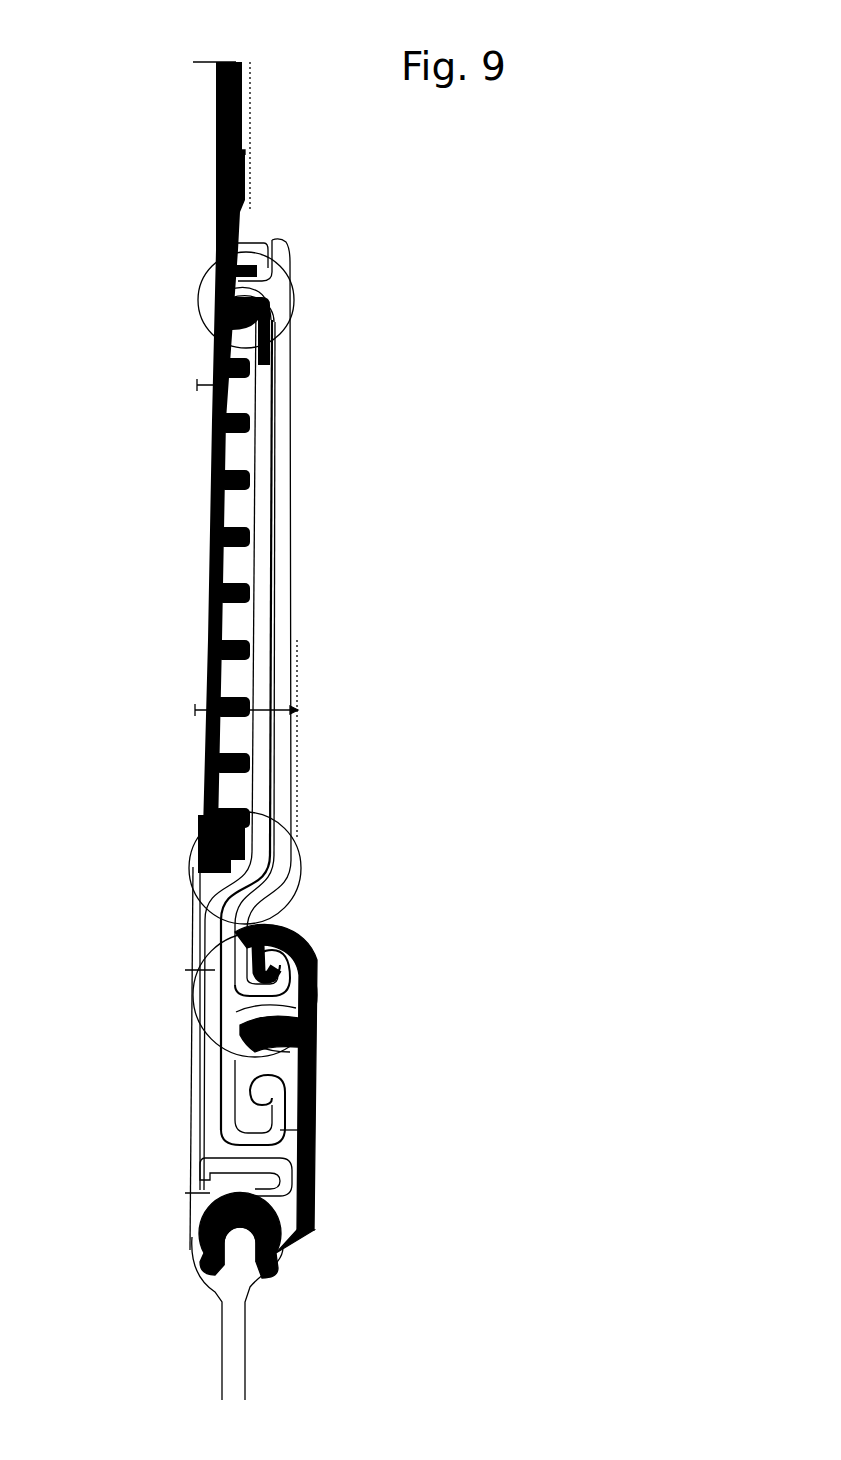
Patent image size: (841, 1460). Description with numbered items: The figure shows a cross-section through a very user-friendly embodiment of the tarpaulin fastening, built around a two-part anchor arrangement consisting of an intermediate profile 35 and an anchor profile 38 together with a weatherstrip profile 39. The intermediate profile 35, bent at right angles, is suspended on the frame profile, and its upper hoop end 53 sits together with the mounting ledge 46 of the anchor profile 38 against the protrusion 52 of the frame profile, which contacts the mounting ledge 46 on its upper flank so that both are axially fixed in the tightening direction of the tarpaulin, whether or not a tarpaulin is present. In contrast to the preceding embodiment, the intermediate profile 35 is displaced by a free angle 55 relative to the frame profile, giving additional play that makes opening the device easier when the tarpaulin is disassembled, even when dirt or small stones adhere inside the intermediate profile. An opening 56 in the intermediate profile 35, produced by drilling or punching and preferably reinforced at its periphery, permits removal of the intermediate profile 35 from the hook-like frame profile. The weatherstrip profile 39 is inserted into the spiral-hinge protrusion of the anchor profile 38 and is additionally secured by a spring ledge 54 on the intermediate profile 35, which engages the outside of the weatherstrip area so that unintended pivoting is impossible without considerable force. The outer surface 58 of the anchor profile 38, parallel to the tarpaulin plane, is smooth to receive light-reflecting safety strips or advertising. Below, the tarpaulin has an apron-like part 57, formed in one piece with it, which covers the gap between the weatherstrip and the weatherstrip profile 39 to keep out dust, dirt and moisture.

The intermediate profile 35 is at (215, 945).
The anchor profile 38 is at (282, 572).
The weatherstrip profile 39 is at (288, 1218).
The mounting ledge 46 is at (232, 286).
The protrusion 52 is at (243, 266).
The upper hoop end 53 is at (270, 300).
The spring ledge 54 is at (240, 1187).
The free angle 55 is at (197, 1095).
The opening 56 is at (273, 360).
The apron-like part 57 is at (263, 1277).
The outer surface 58 is at (290, 657).